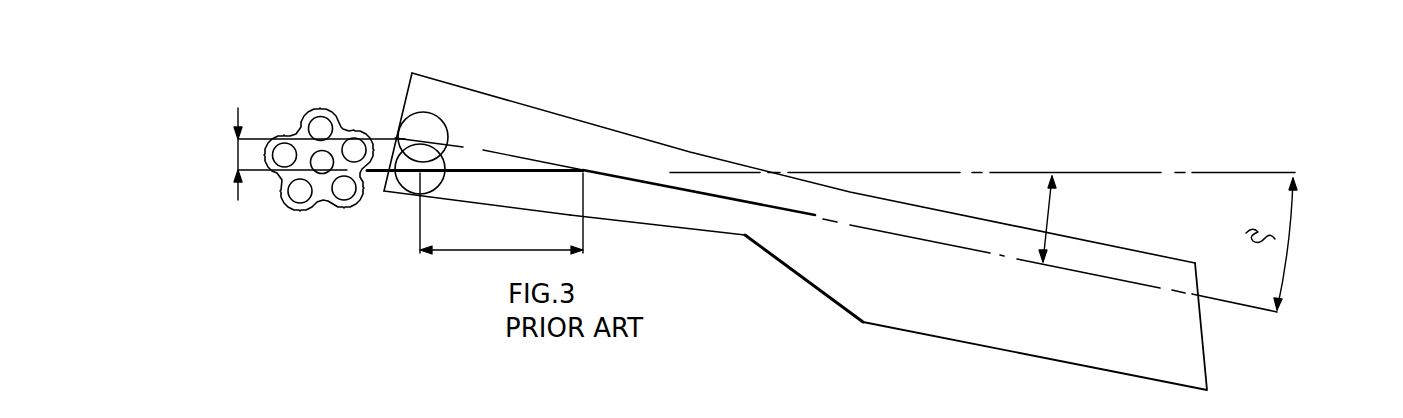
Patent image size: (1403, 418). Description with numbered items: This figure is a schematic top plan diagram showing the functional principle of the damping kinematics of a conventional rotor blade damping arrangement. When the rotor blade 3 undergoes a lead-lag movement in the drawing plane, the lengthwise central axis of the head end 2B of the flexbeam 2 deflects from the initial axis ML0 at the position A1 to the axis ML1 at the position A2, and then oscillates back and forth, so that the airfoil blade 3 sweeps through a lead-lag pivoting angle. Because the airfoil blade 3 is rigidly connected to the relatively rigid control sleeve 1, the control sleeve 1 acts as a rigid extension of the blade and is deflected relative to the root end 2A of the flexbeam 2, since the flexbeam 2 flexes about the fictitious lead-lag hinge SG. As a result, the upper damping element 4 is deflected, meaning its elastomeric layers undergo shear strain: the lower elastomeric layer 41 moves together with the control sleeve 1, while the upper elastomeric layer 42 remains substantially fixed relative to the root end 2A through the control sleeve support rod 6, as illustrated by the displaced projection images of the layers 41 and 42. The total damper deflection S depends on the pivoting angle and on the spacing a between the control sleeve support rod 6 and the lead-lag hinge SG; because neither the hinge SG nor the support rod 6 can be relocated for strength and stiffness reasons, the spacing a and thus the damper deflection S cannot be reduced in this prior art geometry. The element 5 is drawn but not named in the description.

The control sleeve 1 is at (423, 92).
The flexbeam 2 is at (655, 186).
The root end of the flexbeam 2A is at (382, 170).
The head end of the flexbeam 2B is at (723, 200).
The rotor blade 3 is at (1167, 367).
The upper damping element 4 is at (463, 125).
The lower elastomeric layer 41 is at (410, 107).
The upper elastomeric layer 42 is at (385, 192).
The optical fiber bundle 5 is at (322, 200).
The control sleeve support rod 6 is at (417, 175).
The total damper deflection S is at (306, 154).
The lead-lag hinge SG is at (583, 170).
The spacing a is at (501, 213).
The initial axis ML0 is at (930, 172).
The deflected axis ML1 is at (858, 229).
The initial position A1 is at (1188, 205).
The deflected position A2 is at (1283, 257).